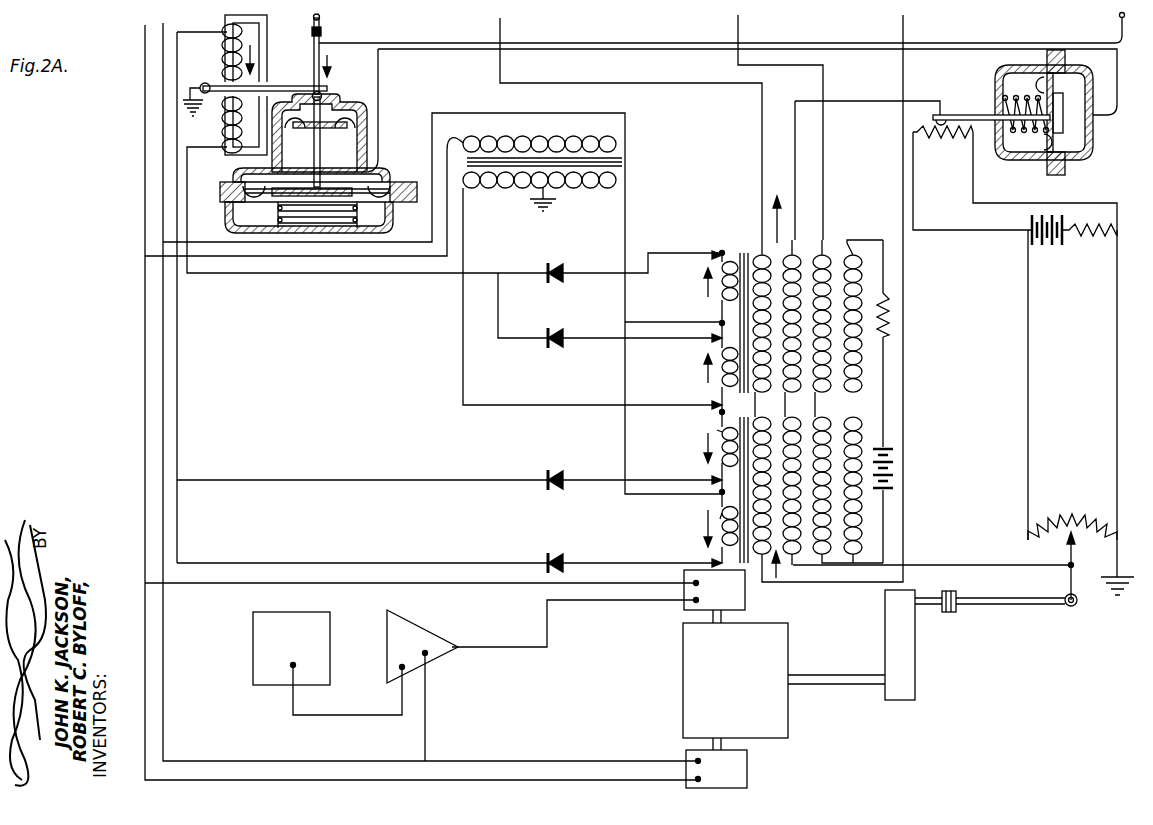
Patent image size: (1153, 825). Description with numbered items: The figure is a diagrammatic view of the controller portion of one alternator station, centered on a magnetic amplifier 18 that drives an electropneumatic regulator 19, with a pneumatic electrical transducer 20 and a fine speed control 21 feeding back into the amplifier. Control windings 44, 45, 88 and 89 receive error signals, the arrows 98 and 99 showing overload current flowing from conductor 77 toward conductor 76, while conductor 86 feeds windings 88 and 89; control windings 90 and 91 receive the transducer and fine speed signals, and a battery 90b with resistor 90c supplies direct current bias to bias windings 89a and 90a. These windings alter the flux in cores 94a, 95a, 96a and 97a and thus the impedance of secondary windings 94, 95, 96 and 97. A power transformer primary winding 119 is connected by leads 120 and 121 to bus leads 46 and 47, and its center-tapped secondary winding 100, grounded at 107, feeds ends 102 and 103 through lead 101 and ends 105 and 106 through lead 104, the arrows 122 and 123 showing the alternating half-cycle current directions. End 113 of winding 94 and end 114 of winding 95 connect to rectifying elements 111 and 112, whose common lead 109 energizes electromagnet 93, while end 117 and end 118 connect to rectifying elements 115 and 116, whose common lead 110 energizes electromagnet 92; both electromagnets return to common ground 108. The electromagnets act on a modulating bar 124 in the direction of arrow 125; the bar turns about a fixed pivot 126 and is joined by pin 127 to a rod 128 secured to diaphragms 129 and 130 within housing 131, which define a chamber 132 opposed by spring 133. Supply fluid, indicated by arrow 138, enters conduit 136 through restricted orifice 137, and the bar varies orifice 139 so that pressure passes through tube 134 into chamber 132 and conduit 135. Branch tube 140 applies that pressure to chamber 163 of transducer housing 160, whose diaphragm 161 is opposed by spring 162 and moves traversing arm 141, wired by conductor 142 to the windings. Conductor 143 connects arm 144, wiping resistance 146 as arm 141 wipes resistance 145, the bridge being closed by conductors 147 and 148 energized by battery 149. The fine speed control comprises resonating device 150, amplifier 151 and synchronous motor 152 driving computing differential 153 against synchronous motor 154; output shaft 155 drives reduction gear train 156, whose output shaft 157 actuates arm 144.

The magnetic amplifier 18 is at (792, 356).
The electropneumatic regulator 19 is at (311, 163).
The pneumatic electrical transducer 20 is at (1031, 119).
The fine speed control device 21 is at (820, 720).
The control winding 44 is at (761, 243).
The control winding 45 is at (763, 570).
The lead 46 is at (163, 326).
The lead 47 is at (145, 366).
The conductor 76 is at (500, 28).
The conductor 77 is at (903, 22).
The conductor 86 is at (738, 26).
The control winding 88 is at (824, 240).
The control winding 89 is at (848, 568).
The bias winding 89a is at (863, 531).
The control winding 90 is at (818, 226).
The bias winding 90a is at (862, 259).
The battery 90b is at (890, 453).
The resistor 90c is at (884, 333).
The control winding 91 is at (823, 568).
The electromagnet 92 is at (222, 53).
The electromagnet 93 is at (222, 136).
The secondary winding 94 is at (716, 295).
The core 94a is at (722, 253).
The secondary winding 95 is at (715, 378).
The core 95a is at (739, 324).
The secondary winding 96 is at (717, 462).
The core 96a is at (717, 430).
The secondary winding 97 is at (717, 547).
The core 97a is at (720, 519).
The arrow 98 is at (779, 581).
The arrow 99 is at (775, 210).
The secondary winding 100 is at (478, 190).
The lead 101 is at (625, 365).
The end of winding 94 102 is at (722, 324).
The end of winding 97 103 is at (720, 492).
The lead 104 is at (463, 371).
The end of winding 95 105 is at (714, 405).
The end of winding 96 106 is at (720, 412).
The ground 107 is at (556, 199).
The common ground 108 is at (190, 105).
The common lead 109 is at (404, 273).
The common lead 110 is at (177, 306).
The rectifying element 111 is at (552, 272).
The rectifying element 112 is at (552, 338).
The end of winding 94 113 is at (718, 257).
The end of winding 95 114 is at (716, 339).
The rectifying element 115 is at (552, 480).
The rectifying element 116 is at (552, 563).
The end of winding 96 117 is at (683, 478).
The end of winding 97 118 is at (712, 565).
The primary winding 119 is at (606, 139).
The lead 120 is at (383, 174).
The lead 121 is at (447, 142).
The arrows 122 is at (706, 280).
The arrows 123 is at (706, 368).
The modulating bar 124 is at (305, 85).
The arrow 125 is at (255, 62).
The fixed pivot 126 is at (206, 82).
The pin 127 is at (322, 96).
The rod 128 is at (326, 136).
The diaphragm 129 is at (300, 136).
The diaphragm 130 is at (350, 188).
The housing 131 is at (392, 168).
The chamber 132 is at (304, 181).
The spring 133 is at (278, 212).
The tube 134 is at (380, 80).
The conduit 135 is at (1112, 40).
The conduit 136 is at (314, 17).
The restricted orifice 137 is at (322, 32).
The arrow 138 is at (329, 61).
The variable orifice 139 is at (320, 84).
The branch tube 140 is at (1117, 60).
The potentiometer traversing arm 141 is at (985, 115).
The conductor 142 is at (848, 103).
The conductor 143 is at (997, 565).
The potentiometer traversing arm 144 is at (1071, 573).
The variable resistance 145 is at (921, 139).
The variable resistance 146 is at (1106, 530).
The conductor 147 is at (1028, 398).
The conductor 148 is at (1117, 398).
The battery 149 is at (1057, 241).
The resonating device 150 is at (326, 630).
The amplifier 151 is at (387, 658).
The synchronous motor 152 is at (738, 605).
The computing differential 153 is at (683, 713).
The synchronous motor 154 is at (742, 772).
The output shaft 155 is at (858, 678).
The reduction gear train 156 is at (888, 635).
The output shaft 157 is at (935, 592).
The housing 160 is at (1066, 170).
The diaphragm 161 is at (1046, 160).
The spring 162 is at (1039, 131).
The chamber 163 is at (1090, 148).